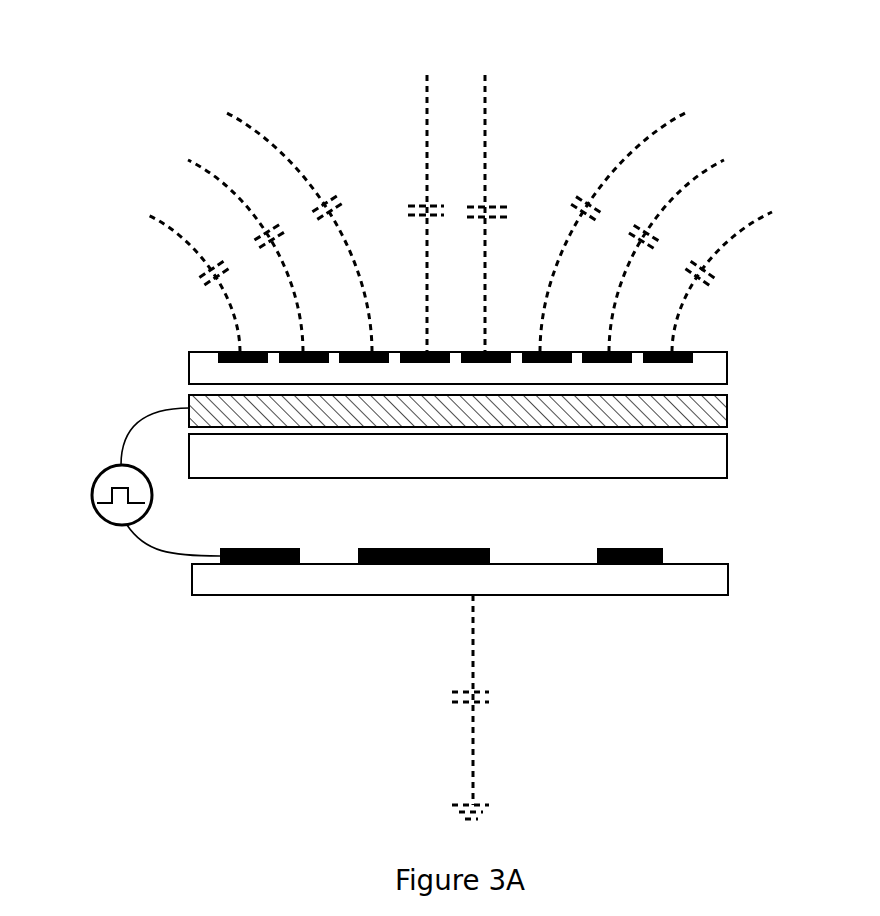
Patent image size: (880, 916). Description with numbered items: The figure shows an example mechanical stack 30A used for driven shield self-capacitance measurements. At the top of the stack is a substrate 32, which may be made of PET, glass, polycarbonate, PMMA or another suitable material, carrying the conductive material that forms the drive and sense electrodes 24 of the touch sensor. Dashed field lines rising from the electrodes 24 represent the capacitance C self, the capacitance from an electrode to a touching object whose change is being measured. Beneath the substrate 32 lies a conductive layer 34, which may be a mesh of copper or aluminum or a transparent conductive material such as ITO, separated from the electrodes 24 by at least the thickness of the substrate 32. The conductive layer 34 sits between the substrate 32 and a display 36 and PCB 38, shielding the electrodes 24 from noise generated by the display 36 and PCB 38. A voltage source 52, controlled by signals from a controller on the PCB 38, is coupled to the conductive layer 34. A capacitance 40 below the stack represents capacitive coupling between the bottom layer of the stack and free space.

The drive and sense electrodes 24 is at (216, 358).
The mechanical stack 30A is at (463, 64).
The substrate 32 is at (737, 373).
The conductive layer 34 is at (737, 416).
The display 36 is at (737, 462).
The PCB 38 is at (737, 580).
The capacitance 40 is at (495, 700).
The voltage source 52 is at (84, 500).